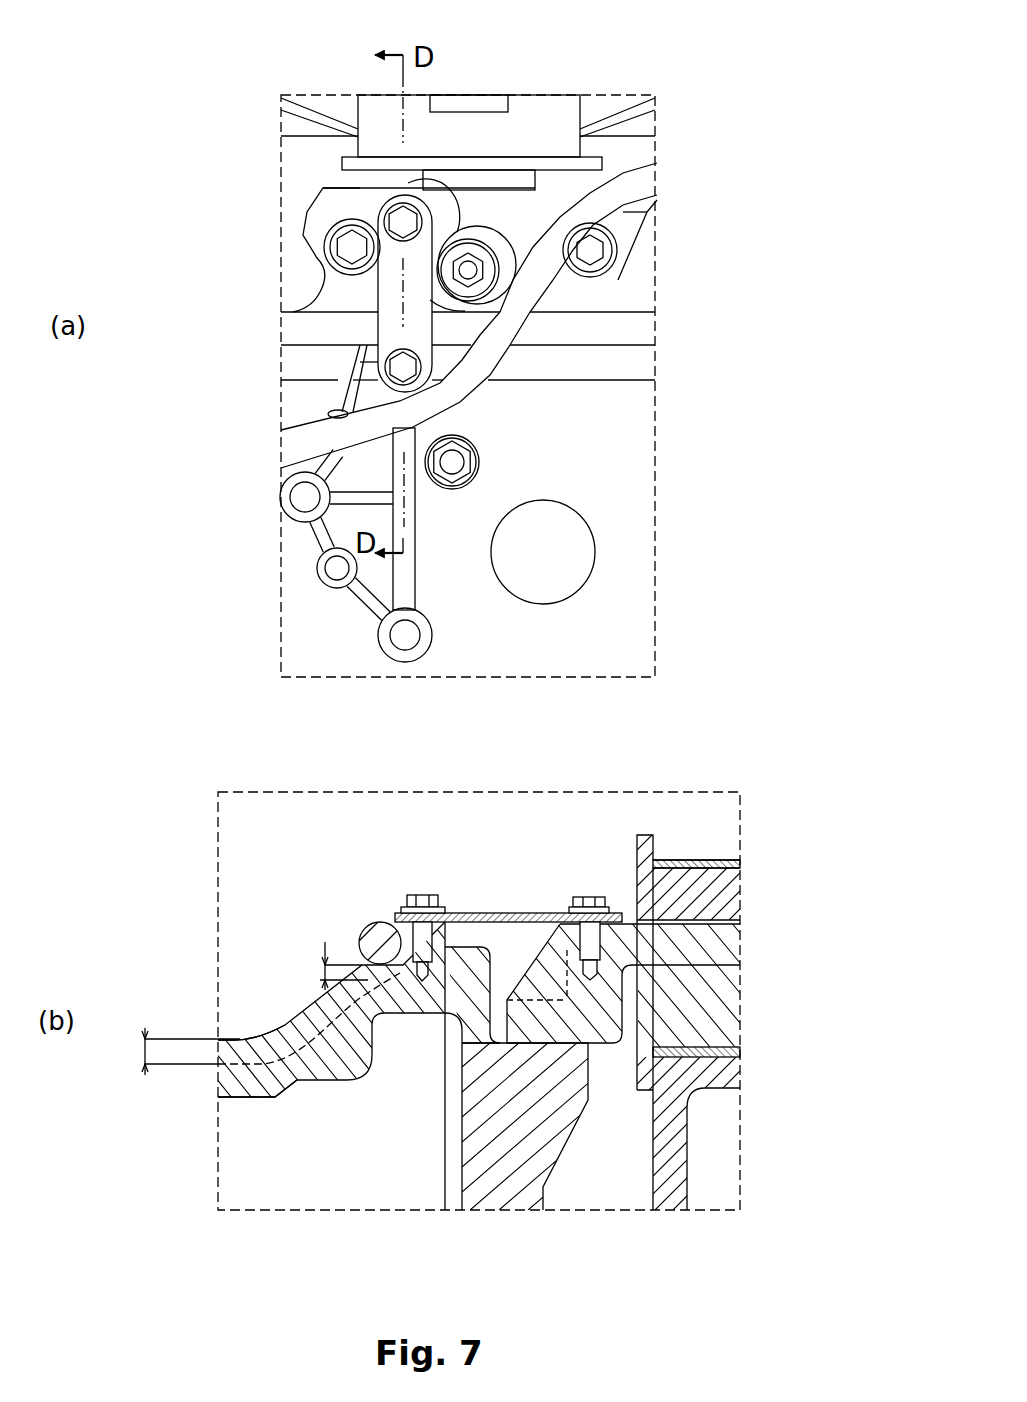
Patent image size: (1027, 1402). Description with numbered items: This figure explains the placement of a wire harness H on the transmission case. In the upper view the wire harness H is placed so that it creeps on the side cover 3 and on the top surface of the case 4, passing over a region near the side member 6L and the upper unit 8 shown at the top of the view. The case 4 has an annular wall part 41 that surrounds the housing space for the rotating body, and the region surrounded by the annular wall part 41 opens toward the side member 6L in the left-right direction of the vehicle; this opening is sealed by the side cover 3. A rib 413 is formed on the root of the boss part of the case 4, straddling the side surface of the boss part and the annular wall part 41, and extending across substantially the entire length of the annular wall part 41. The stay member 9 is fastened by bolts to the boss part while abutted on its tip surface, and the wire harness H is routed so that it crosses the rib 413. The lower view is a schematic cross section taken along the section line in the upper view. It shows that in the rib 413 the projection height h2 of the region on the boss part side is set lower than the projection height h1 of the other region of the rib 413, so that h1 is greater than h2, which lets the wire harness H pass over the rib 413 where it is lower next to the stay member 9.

The upper unit / drive unit 8 is at (604, 104).
The side member 6L is at (295, 132).
The side cover 3 is at (280, 317).
The stay member 9 is at (376, 320).
The wire harness H is at (480, 401).
The case 4 is at (295, 530).
The rib 413 is at (414, 590).
The annular wall part 41 is at (228, 1083).
The projection height h1 is at (176, 1051).
The projection height h2 is at (325, 942).